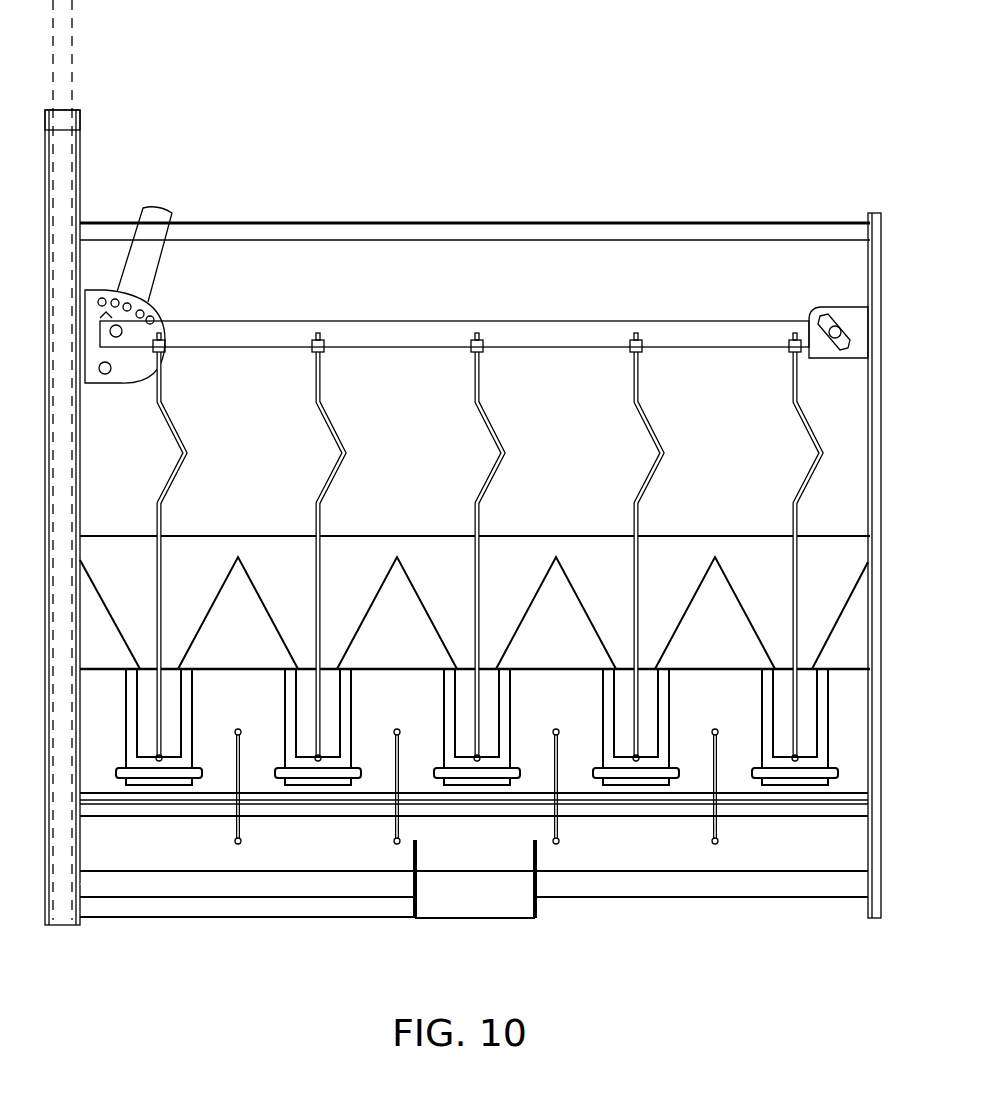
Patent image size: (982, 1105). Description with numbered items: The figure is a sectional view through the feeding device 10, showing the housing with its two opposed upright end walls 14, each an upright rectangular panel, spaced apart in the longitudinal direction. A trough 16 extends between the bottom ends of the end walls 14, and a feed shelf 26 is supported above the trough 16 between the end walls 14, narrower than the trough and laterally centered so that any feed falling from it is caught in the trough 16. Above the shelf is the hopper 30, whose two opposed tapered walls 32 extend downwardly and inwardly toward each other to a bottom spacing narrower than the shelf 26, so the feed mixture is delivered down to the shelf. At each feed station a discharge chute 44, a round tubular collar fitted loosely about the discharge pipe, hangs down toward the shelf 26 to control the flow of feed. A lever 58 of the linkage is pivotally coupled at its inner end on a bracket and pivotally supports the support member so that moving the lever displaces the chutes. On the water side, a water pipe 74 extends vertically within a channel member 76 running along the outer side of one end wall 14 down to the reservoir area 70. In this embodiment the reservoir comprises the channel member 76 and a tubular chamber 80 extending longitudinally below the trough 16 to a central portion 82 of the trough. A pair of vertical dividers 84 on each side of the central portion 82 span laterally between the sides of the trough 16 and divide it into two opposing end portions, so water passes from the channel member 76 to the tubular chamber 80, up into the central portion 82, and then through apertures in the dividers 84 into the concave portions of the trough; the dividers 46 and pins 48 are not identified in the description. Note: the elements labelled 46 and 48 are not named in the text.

The device 10 is at (447, 152).
The end wall 14 is at (88, 220).
The trough 16 is at (279, 876).
The feed shelf 26 is at (752, 796).
The hopper 30 is at (590, 290).
The tapered wall 32 is at (487, 547).
The discharge chute 44 is at (508, 710).
The divider 46 is at (474, 613).
The pin 48 is at (476, 786).
The lever 58 is at (160, 250).
The reservoir area 70 is at (180, 906).
The water pipe 74 is at (78, 28).
The channel member 76 is at (82, 127).
The tubular chamber 80 is at (321, 903).
The central portion 82 is at (472, 898).
The vertical divider 84 is at (413, 848).